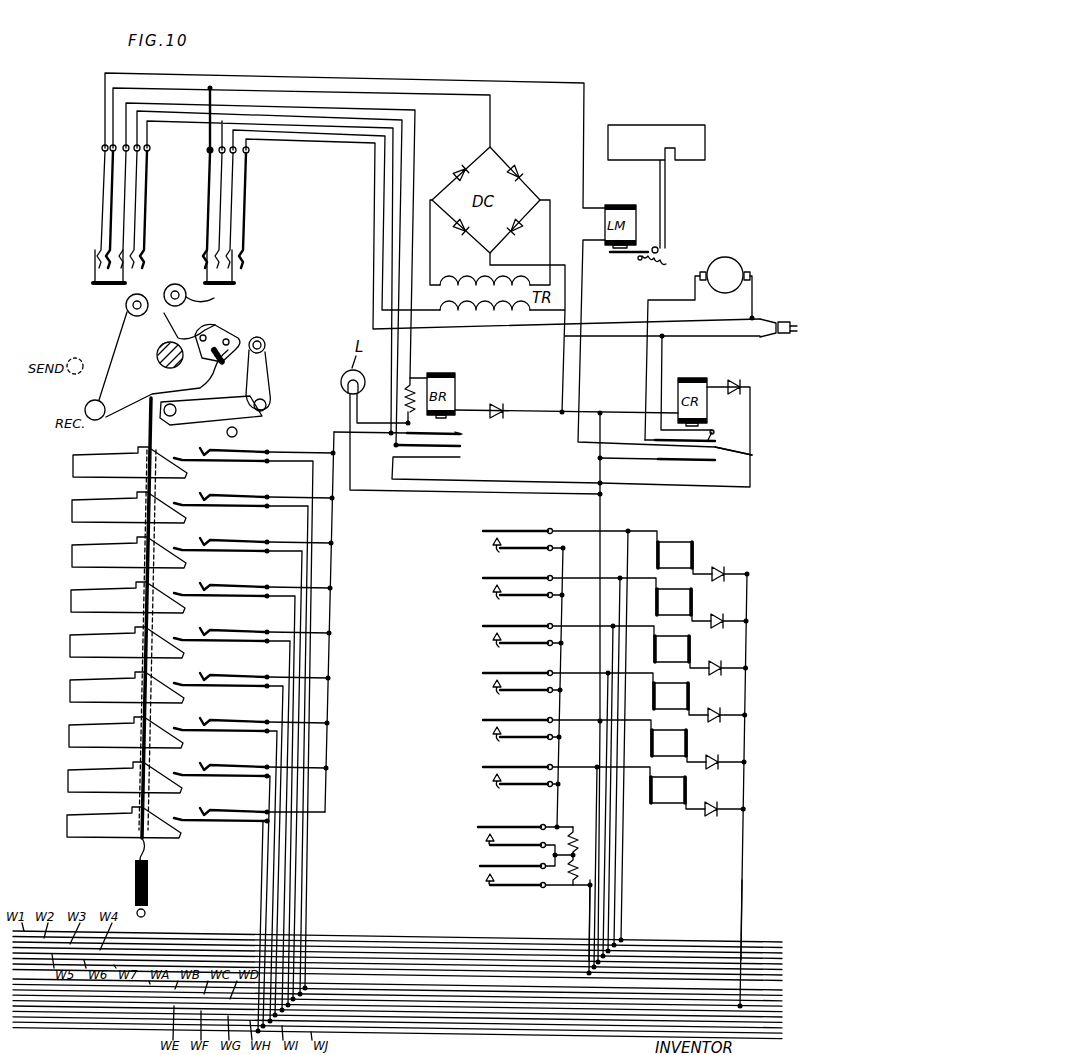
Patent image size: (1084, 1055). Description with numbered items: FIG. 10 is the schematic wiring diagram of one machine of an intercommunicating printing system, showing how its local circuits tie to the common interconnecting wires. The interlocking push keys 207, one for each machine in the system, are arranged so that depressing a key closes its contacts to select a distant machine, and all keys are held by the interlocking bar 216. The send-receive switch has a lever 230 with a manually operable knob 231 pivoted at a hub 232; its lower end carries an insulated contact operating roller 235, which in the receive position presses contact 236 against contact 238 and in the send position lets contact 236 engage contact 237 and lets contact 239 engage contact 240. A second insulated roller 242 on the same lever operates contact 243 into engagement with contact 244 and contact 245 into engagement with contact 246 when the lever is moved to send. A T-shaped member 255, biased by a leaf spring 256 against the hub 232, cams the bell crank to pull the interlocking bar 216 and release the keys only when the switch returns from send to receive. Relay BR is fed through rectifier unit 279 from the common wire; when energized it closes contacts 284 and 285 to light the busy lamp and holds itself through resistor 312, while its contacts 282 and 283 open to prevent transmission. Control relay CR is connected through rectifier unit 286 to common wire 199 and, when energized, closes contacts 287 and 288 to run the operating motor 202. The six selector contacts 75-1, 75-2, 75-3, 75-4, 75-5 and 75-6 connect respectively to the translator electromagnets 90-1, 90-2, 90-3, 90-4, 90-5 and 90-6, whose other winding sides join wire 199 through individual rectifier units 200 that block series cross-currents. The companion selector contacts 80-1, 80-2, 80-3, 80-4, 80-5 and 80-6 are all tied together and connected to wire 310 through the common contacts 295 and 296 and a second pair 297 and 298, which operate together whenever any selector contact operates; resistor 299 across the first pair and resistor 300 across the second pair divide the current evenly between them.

The contact 239 is at (100, 208).
The contact 240 is at (110, 241).
The contact 236 is at (130, 228).
The contact 237 is at (136, 210).
The contact 238 is at (146, 237).
The contact 243 is at (207, 245).
The contact 244 is at (240, 244).
The contact 245 is at (235, 205).
The contact 246 is at (247, 222).
The insulated roller 242 is at (190, 300).
The contact operating roller 235 is at (160, 286).
The switch lever 230 is at (120, 372).
The pivot 232 is at (165, 348).
The knob 231 is at (83, 408).
The T-shaped member 255 is at (238, 336).
The leaf spring 256 is at (259, 344).
The interlocking bar 216 is at (150, 428).
The keys 207 is at (72, 505).
The resistor 312 is at (412, 386).
The rectifier unit 279 is at (500, 404).
The contact 285 is at (462, 431).
The contact 284 is at (464, 434).
The contact 282 is at (464, 446).
The contact 283 is at (462, 457).
The rectifier unit 286 is at (732, 381).
The contact 288 is at (712, 429).
The contact 287 is at (720, 440).
The motor 202 is at (730, 258).
The selector contact 75-1 is at (483, 531).
The selector contact 75-2 is at (483, 578).
The selector contact 75-3 is at (483, 626).
The selector contact 75-4 is at (483, 673).
The selector contact 75-5 is at (483, 720).
The selector contact 75-6 is at (483, 767).
The selector contact 80-1 is at (503, 552).
The selector contact 80-2 is at (503, 599).
The selector contact 80-3 is at (503, 647).
The selector contact 80-4 is at (503, 694).
The selector contact 80-5 is at (503, 741).
The selector contact 80-6 is at (503, 788).
The electromagnet 90-1 is at (690, 545).
The electromagnet 90-2 is at (692, 602).
The electromagnet 90-3 is at (690, 649).
The electromagnet 90-4 is at (689, 696).
The electromagnet 90-5 is at (687, 743).
The electromagnet 90-6 is at (686, 790).
The rectifier units 200 is at (724, 572).
The common contact 295 is at (478, 827).
The common contact 296 is at (485, 839).
The common contact 297 is at (480, 866).
The common contact 298 is at (490, 888).
The resistor 299 is at (578, 830).
The resistor 300 is at (572, 878).
The wire 310 is at (588, 930).
The common wire 199 is at (740, 897).